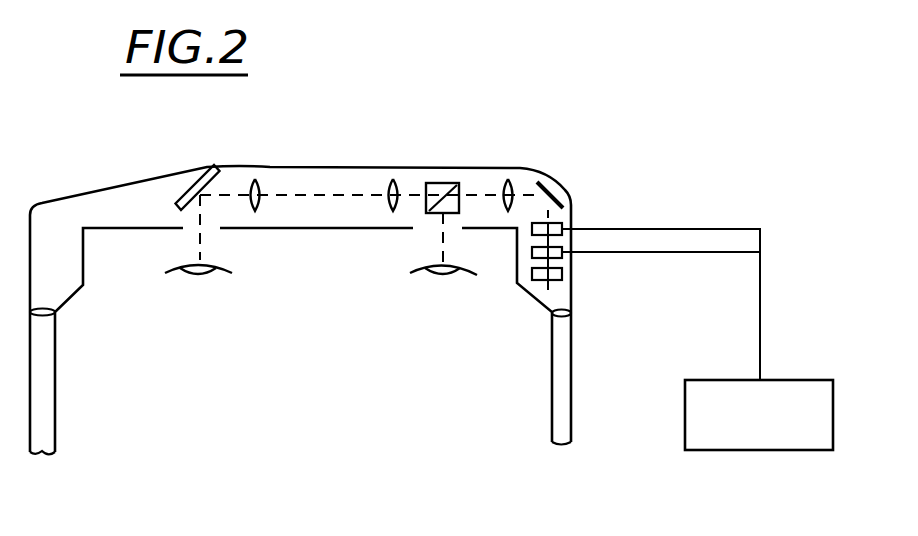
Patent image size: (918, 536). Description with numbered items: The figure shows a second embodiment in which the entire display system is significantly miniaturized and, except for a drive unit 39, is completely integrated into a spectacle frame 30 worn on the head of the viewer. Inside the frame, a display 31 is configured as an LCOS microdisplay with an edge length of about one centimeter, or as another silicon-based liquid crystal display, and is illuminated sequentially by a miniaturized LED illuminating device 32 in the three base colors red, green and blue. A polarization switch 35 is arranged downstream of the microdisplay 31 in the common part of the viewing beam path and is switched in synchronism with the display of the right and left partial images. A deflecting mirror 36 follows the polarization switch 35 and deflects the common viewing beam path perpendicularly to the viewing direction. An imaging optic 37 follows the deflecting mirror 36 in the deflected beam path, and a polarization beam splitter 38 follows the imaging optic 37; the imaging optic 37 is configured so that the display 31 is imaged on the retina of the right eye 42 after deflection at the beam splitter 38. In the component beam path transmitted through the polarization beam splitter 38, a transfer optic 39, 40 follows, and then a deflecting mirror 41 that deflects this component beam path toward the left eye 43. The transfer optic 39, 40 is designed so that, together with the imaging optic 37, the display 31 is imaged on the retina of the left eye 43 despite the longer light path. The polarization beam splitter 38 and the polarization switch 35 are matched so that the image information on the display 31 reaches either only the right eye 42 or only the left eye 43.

The spectacle frame 30 is at (110, 204).
The display 31 is at (570, 256).
The illuminating device 32 is at (570, 280).
The polarization switch 35 is at (570, 228).
The deflecting mirror 36 is at (537, 182).
The imaging optic 37 is at (505, 178).
The polarization beam splitter 38 is at (444, 170).
The drive unit 39 is at (390, 178).
The transfer optic 40 is at (253, 176).
The deflecting mirror 41 is at (214, 170).
The right eye 42 is at (467, 275).
The left eye 43 is at (228, 273).